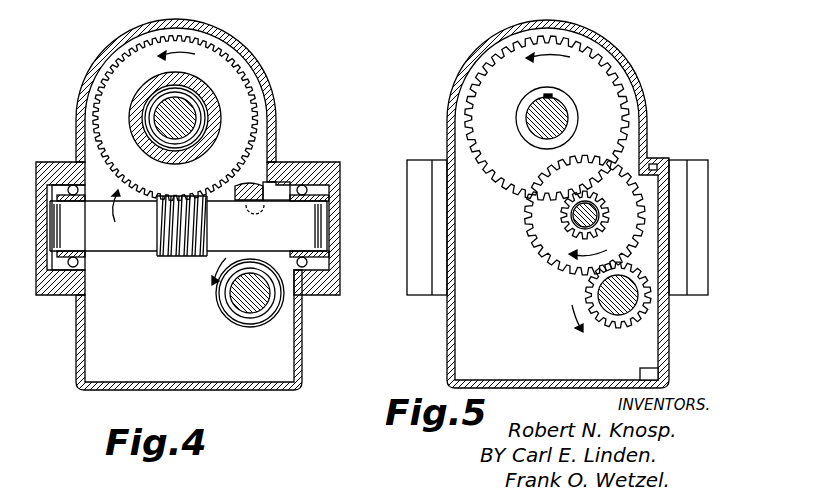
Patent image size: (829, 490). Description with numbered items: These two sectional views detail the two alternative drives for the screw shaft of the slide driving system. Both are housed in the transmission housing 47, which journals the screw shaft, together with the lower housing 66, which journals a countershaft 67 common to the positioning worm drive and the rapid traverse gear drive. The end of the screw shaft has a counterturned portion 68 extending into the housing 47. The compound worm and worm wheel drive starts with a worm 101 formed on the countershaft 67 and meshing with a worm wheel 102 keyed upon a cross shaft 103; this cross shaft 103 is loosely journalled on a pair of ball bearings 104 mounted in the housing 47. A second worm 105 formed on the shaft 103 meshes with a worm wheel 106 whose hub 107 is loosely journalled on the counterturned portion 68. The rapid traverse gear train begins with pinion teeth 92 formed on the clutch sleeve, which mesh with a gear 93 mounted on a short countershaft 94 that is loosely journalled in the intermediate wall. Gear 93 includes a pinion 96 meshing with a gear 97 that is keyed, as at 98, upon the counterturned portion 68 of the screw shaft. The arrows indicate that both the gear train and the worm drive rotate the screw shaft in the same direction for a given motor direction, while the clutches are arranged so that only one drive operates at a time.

In FIG. 4, the transmission housing 47 is at (259, 66).
In FIG. 5, the transmission housing 47 is at (628, 61).
In FIG. 4, the lower housing 66 is at (117, 392).
In FIG. 4, the countershaft 67 is at (259, 310).
In FIG. 5, the countershaft 67 is at (598, 292).
In FIG. 4, the counterturned portion of the screw shaft 68 is at (188, 122).
In FIG. 5, the counterturned portion of the screw shaft 68 is at (536, 126).
In FIG. 5, the pinion teeth 92 is at (619, 322).
In FIG. 5, the gear 93 is at (542, 219).
In FIG. 5, the short countershaft 94 is at (598, 205).
In FIG. 5, the pinion 96 is at (580, 232).
In FIG. 5, the gear 97 is at (508, 177).
In FIG. 5, the key 98 is at (548, 94).
In FIG. 4, the worm 101 is at (233, 318).
In FIG. 4, the worm wheel 102 is at (274, 168).
In FIG. 4, the cross shaft 103 is at (111, 240).
In FIG. 4, the ball bearings 104 is at (334, 190).
In FIG. 4, the worm 105 is at (163, 258).
In FIG. 4, the worm wheel 106 is at (118, 110).
In FIG. 4, the hub 107 is at (166, 76).